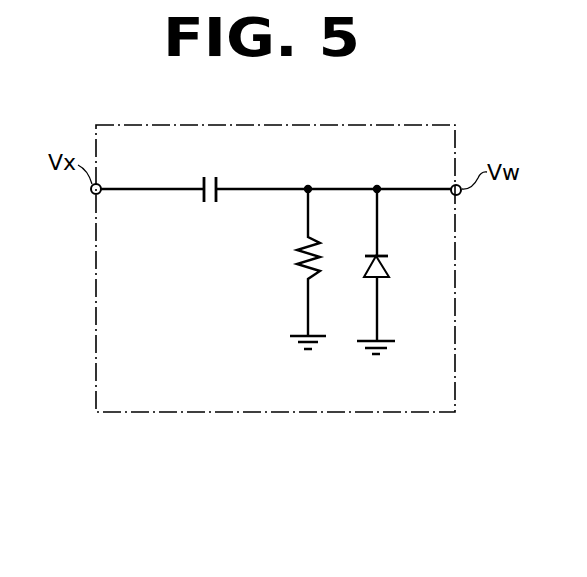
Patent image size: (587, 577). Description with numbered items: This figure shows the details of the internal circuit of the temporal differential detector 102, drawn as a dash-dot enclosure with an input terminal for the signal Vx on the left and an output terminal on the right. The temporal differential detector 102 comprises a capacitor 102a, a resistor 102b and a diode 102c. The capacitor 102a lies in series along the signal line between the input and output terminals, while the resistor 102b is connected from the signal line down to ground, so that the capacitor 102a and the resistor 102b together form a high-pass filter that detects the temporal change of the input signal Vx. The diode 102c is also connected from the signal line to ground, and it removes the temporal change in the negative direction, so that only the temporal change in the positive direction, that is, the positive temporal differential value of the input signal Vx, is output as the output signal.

The temporal differential detector 102 is at (224, 413).
The capacitor 102a is at (213, 200).
The resistor 102b is at (298, 268).
The diode 102c is at (389, 262).